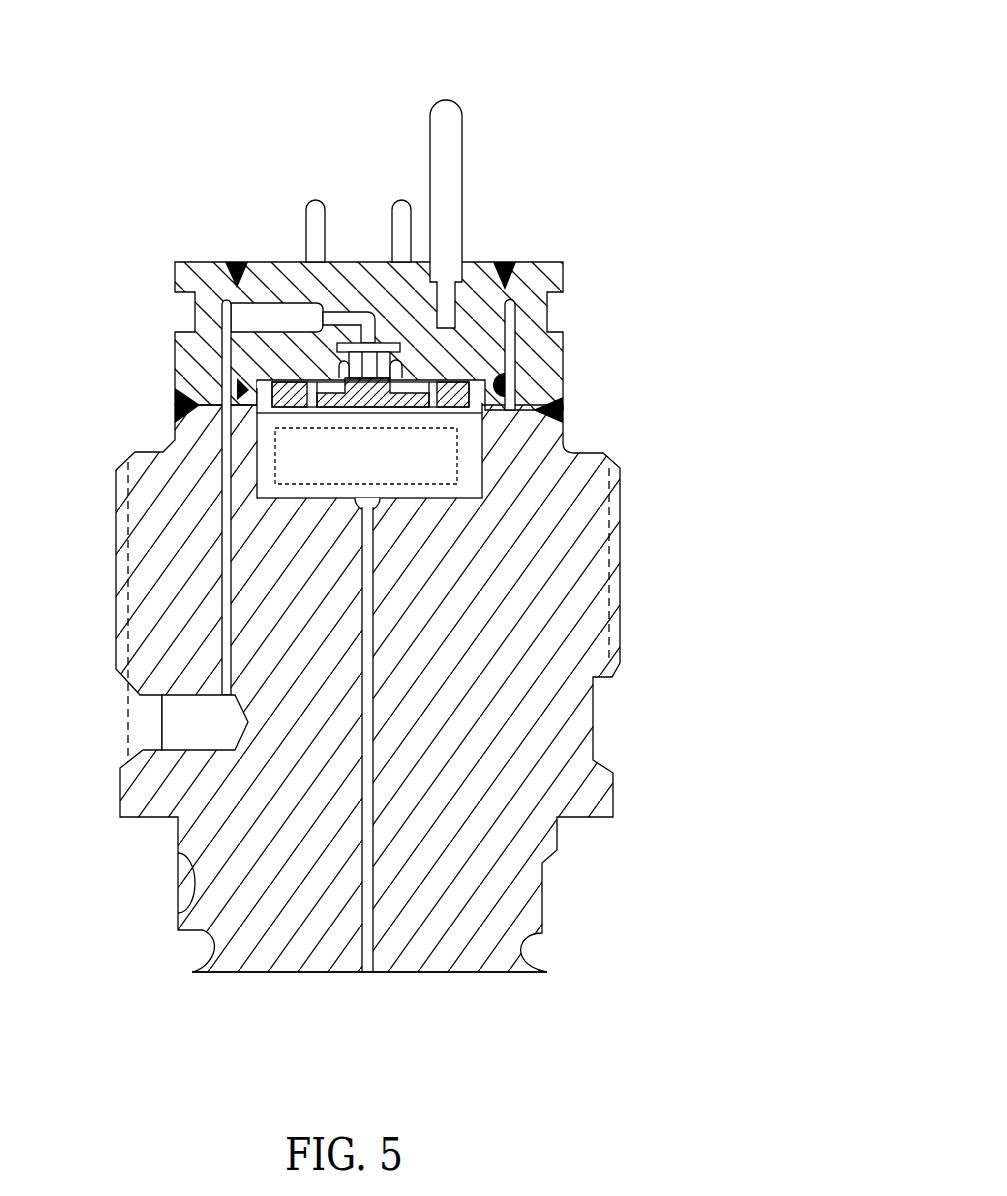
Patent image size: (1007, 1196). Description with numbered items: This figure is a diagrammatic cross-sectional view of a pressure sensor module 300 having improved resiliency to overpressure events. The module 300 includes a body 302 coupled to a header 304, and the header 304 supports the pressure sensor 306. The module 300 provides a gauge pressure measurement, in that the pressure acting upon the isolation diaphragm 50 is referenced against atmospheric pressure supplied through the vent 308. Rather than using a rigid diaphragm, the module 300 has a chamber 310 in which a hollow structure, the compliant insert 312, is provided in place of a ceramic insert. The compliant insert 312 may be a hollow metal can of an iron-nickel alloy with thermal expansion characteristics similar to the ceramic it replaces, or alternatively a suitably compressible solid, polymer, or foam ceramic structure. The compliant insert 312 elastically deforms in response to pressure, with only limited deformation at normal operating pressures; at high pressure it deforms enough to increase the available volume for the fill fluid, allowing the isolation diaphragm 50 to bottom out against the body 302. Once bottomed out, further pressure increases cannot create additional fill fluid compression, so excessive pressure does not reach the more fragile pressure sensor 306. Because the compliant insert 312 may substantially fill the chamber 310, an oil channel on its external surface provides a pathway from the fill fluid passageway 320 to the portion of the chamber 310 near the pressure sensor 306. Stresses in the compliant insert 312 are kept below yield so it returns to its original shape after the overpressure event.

The pressure sensor module 300 is at (363, 523).
The body 302 is at (617, 569).
The header 304 is at (563, 265).
The pressure sensor 306 is at (392, 354).
The vent 308 is at (190, 718).
The chamber 310 is at (476, 463).
The compliant insert 312 is at (318, 464).
The fill fluid passageway 320 is at (367, 643).
The isolation diaphragm 50 is at (422, 972).